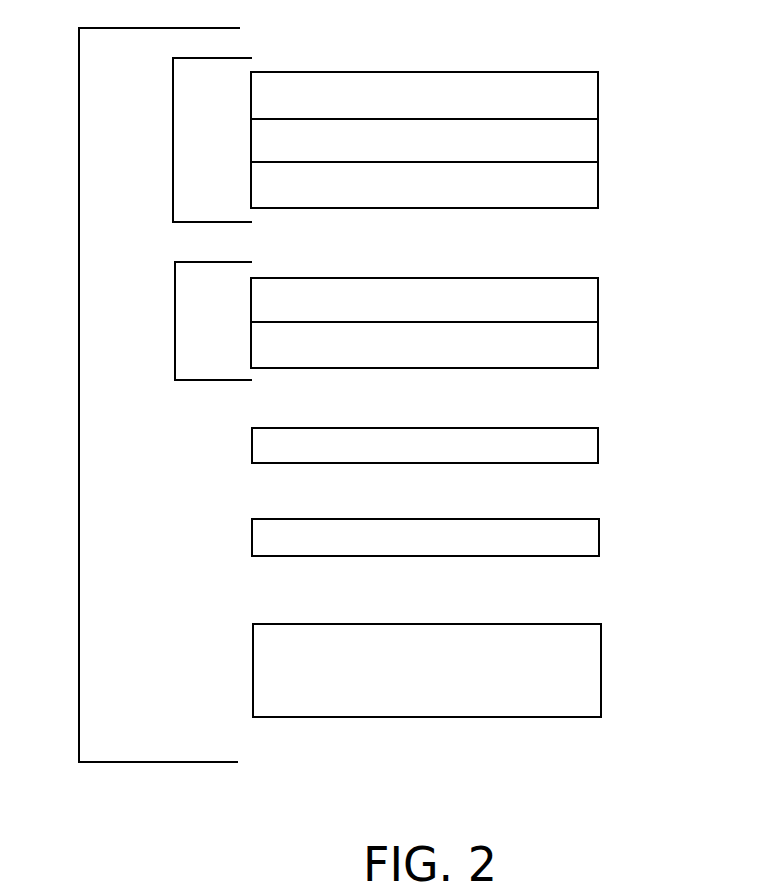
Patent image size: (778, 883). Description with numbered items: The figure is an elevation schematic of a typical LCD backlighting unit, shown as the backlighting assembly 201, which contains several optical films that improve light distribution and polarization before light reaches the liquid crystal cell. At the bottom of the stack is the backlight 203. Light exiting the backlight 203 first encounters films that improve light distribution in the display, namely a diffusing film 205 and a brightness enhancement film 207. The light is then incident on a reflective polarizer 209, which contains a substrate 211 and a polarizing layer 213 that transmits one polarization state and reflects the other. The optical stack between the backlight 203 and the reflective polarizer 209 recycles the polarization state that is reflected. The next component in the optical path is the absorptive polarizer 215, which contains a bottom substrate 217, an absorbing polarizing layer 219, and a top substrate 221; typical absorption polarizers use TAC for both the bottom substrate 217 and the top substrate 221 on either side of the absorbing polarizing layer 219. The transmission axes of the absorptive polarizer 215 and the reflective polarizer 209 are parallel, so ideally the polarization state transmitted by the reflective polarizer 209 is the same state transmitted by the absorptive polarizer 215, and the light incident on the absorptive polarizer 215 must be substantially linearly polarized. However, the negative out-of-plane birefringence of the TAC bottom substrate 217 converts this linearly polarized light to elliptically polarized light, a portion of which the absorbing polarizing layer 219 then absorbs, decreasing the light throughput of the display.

The backlighting assembly 201 is at (131, 395).
The backlight 203 is at (601, 668).
The diffusing film 205 is at (599, 540).
The brightness enhancement film 207 is at (598, 451).
The reflective polarizer 209 is at (363, 321).
The substrate 211 is at (598, 347).
The polarizing layer 213 is at (598, 295).
The absorptive polarizer 215 is at (364, 140).
The bottom substrate 217 is at (598, 188).
The absorbing polarizing layer 219 is at (598, 142).
The top substrate 221 is at (598, 89).